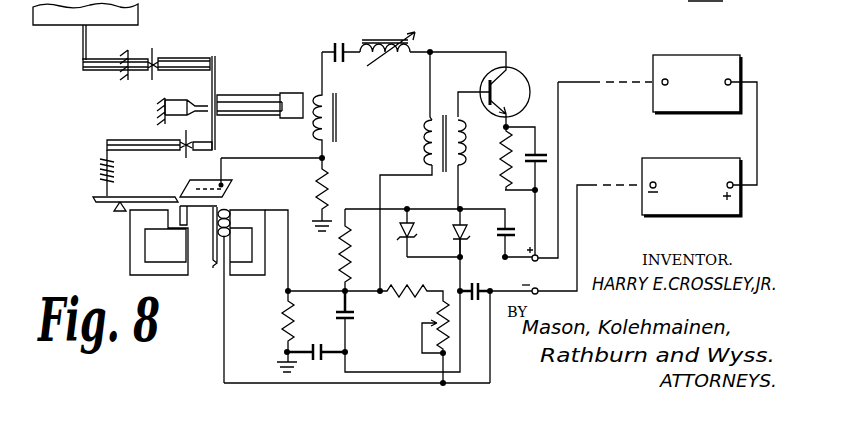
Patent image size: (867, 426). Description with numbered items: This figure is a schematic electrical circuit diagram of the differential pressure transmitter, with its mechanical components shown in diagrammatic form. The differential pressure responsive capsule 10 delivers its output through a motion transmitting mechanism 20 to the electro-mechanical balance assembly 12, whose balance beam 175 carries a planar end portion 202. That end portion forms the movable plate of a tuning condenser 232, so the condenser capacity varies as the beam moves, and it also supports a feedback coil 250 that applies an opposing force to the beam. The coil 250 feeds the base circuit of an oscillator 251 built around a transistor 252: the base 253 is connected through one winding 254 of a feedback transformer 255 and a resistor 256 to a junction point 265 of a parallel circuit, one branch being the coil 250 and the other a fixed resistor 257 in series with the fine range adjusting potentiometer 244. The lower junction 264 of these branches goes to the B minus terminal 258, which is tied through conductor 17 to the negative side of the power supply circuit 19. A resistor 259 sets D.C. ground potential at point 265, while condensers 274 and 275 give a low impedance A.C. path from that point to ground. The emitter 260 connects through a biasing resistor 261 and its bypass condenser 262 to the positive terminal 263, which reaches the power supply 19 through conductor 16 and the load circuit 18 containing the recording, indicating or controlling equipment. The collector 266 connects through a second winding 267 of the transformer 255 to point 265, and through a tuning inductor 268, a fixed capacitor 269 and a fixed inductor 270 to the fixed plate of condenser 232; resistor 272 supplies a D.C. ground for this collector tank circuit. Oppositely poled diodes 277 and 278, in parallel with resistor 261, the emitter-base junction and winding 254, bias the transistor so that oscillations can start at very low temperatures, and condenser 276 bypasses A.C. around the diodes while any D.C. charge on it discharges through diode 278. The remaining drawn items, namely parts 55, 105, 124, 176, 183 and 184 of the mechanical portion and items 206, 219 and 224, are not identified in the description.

The differential pressure responsive capsule 10 is at (140, 20).
The drive shaft 55 is at (198, 55).
The motion transmitting mechanism 20 is at (240, 78).
The stylus holder 105 is at (265, 91).
The link rod 124 is at (135, 140).
The spring 176 is at (100, 168).
The balance beam 175 is at (123, 197).
The tuning condenser 232 is at (183, 186).
The planar end portion 202 is at (207, 177).
The electro-mechanical balance assembly 12 is at (268, 203).
The magnetic core 183 is at (130, 240).
The armature 184 is at (197, 236).
The feedback coil 250 is at (222, 245).
The fixed capacitor 269 is at (352, 30).
The tuning inductor 268 is at (381, 48).
The fixed inductor 270 is at (340, 100).
The resistor 272 is at (328, 186).
The feedback transformer 255 is at (446, 109).
The second winding 267 is at (425, 135).
The winding 254 is at (465, 150).
The base 253 is at (488, 86).
The collector 266 is at (516, 84).
The oscillator 251 is at (540, 67).
The transistor 252 is at (530, 78).
The emitter 260 is at (513, 110).
The biasing resistor 261 is at (500, 165).
The bypass condenser 262 is at (545, 158).
The conductor 16 is at (563, 181).
The conductor 17 is at (577, 240).
The load circuit 18 is at (672, 40).
The power supply circuit 19 is at (722, 158).
The resistor 256 is at (345, 250).
The junction point 265 is at (345, 287).
The diode 277 is at (412, 238).
The diode 278 is at (466, 232).
The condenser 276 is at (509, 228).
The positive terminal 263 is at (530, 263).
The B minus terminal 258 is at (538, 291).
The fixed resistor 257 is at (408, 272).
The condenser 275 is at (364, 307).
The fine range adjusting potentiometer 244 is at (437, 312).
The lower junction 264 is at (443, 380).
The capacitor 219 is at (475, 307).
The resistor 259 is at (287, 316).
The condenser 274 is at (312, 348).
The element of adjacent figure 206 is at (636, 4).
The element of adjacent figure 224 is at (724, 16).